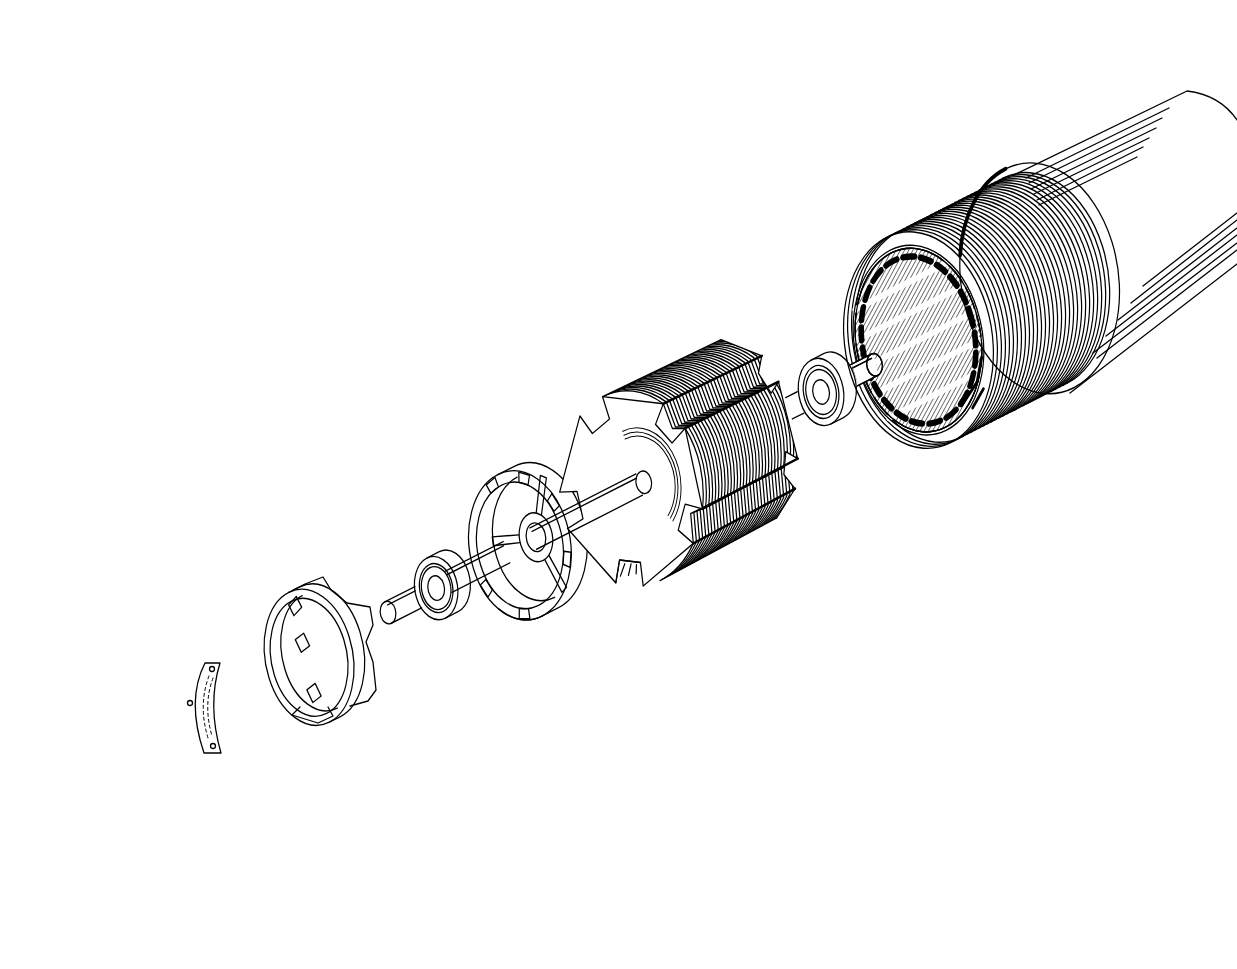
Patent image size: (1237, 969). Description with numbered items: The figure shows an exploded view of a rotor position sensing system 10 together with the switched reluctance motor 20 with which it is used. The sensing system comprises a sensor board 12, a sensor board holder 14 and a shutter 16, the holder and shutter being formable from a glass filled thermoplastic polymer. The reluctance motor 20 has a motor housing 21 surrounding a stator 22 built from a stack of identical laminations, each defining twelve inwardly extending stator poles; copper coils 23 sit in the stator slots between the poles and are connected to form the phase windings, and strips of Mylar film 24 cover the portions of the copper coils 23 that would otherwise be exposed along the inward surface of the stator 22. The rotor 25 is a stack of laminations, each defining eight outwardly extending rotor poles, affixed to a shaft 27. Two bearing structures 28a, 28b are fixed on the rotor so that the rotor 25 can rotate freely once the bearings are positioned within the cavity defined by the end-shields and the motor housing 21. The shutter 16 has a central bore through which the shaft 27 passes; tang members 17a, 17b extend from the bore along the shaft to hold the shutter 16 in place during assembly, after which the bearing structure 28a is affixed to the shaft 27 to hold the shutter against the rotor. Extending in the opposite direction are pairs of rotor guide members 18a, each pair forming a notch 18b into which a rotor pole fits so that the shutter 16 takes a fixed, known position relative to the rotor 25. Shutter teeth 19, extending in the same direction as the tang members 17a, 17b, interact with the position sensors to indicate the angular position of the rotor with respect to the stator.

The rotor position sensing system 10 is at (470, 158).
The sensor board 12 is at (200, 663).
The sensor board holder 14 is at (300, 578).
The shutter 16 is at (500, 470).
The tang member 17a is at (545, 600).
The tang member 17b is at (470, 545).
The rotor guide members 18a is at (538, 493).
The notch 18b is at (535, 478).
The shutter teeth 19 is at (520, 600).
The switched reluctance motor 20 is at (820, 143).
The motor housing 21 is at (1062, 138).
The stator 22 is at (930, 215).
The copper coils 23 is at (965, 400).
The strips of Mylar film 24 is at (940, 412).
The rotor 25 is at (590, 360).
The shaft 27 is at (628, 560).
The bearing structure 28a is at (430, 565).
The bearing structure 28b is at (800, 365).